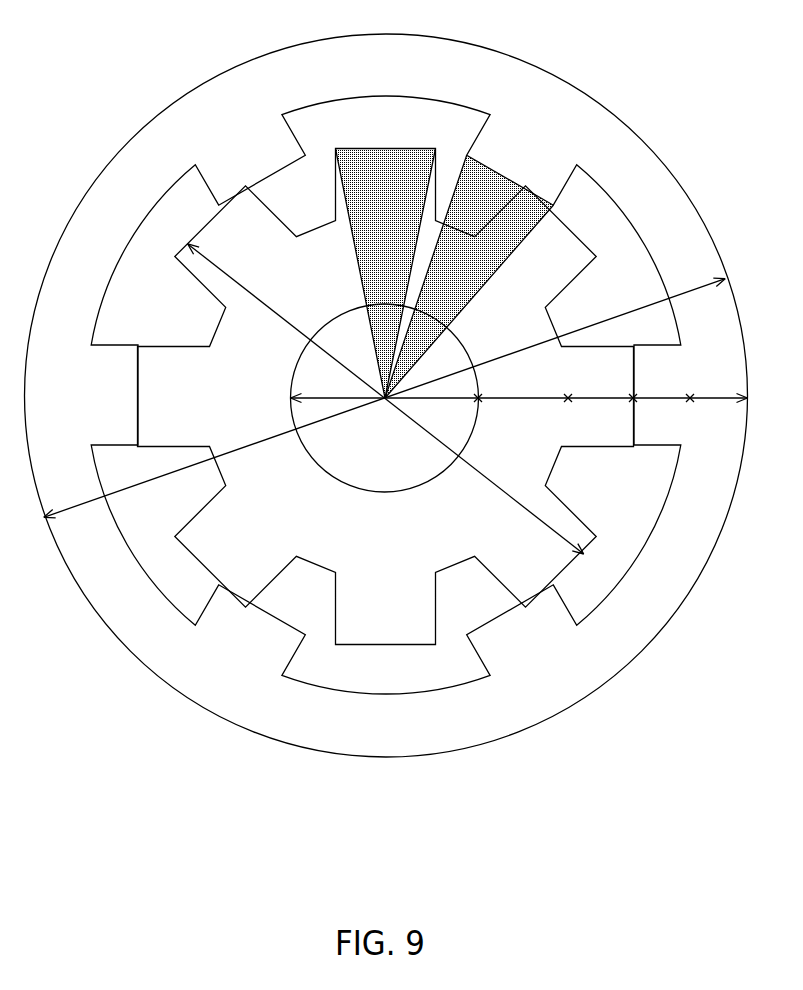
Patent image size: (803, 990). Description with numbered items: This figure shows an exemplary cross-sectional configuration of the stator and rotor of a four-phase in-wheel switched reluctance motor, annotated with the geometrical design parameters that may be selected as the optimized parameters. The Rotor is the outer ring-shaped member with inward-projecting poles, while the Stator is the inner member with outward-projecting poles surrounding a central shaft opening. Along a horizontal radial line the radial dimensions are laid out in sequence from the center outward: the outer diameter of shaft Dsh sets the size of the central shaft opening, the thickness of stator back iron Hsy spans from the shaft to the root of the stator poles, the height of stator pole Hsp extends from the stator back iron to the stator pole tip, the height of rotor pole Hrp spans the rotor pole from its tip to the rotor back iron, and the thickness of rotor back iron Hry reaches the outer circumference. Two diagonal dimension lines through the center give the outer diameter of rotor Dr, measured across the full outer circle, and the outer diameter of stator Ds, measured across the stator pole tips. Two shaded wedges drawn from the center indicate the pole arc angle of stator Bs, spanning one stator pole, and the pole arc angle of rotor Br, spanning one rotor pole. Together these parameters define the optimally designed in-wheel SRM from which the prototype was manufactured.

The rotor Rotor is at (242, 142).
The stator Stator is at (375, 580).
The outer diameter of shaft Dsh is at (387, 398).
The outer diameter of rotor Dr is at (384, 398).
The outer diameter of stator Ds is at (386, 399).
The thickness of stator back iron Hsy is at (525, 380).
The height of stator pole Hsp is at (602, 380).
The height of rotor pole Hrp is at (663, 380).
The thickness of rotor back iron Hry is at (719, 379).
The pole arc angle of stator Bs is at (386, 274).
The pole arc angle of rotor Br is at (469, 276).